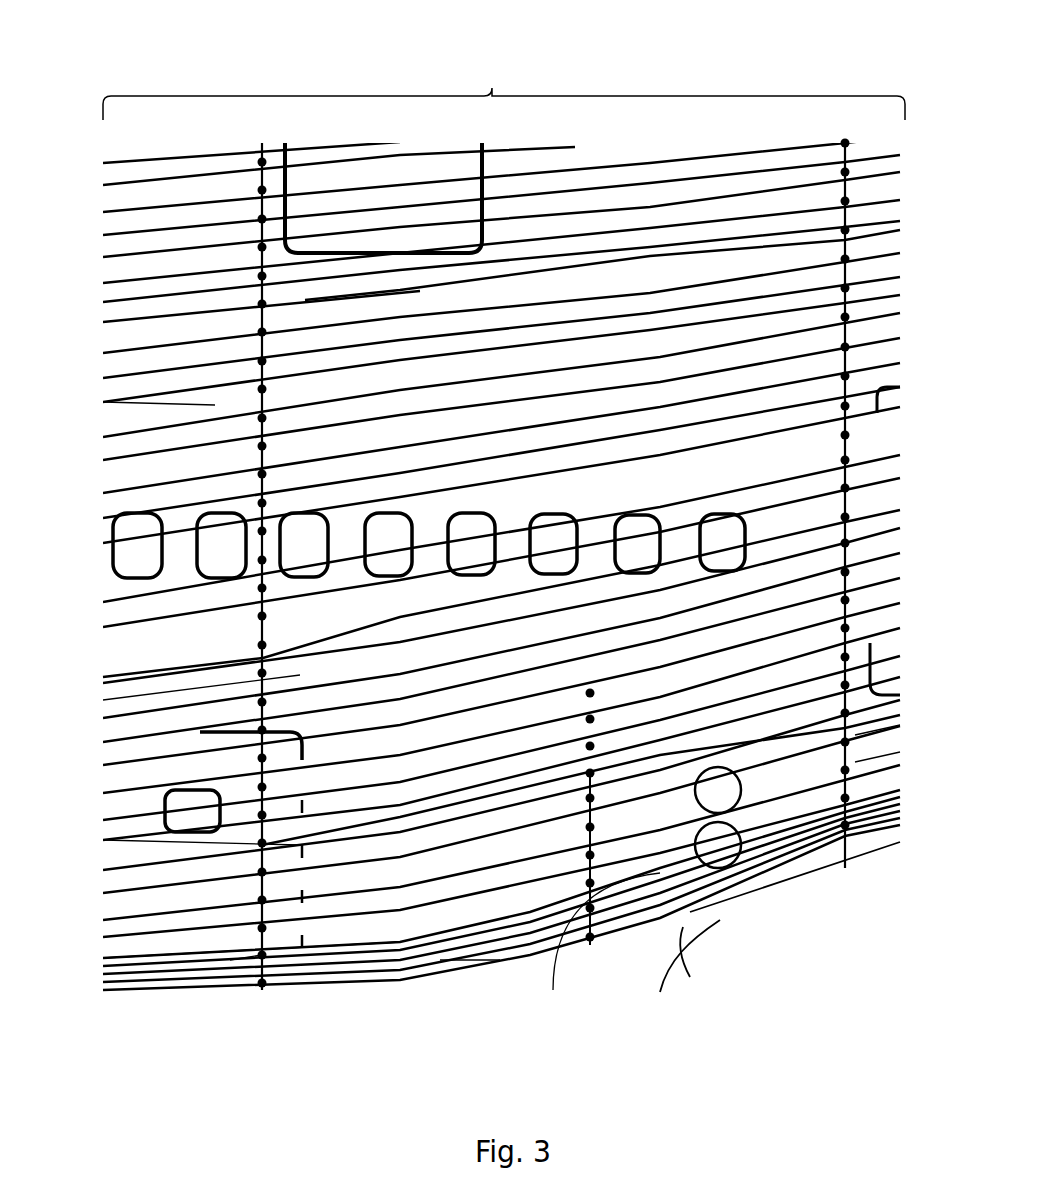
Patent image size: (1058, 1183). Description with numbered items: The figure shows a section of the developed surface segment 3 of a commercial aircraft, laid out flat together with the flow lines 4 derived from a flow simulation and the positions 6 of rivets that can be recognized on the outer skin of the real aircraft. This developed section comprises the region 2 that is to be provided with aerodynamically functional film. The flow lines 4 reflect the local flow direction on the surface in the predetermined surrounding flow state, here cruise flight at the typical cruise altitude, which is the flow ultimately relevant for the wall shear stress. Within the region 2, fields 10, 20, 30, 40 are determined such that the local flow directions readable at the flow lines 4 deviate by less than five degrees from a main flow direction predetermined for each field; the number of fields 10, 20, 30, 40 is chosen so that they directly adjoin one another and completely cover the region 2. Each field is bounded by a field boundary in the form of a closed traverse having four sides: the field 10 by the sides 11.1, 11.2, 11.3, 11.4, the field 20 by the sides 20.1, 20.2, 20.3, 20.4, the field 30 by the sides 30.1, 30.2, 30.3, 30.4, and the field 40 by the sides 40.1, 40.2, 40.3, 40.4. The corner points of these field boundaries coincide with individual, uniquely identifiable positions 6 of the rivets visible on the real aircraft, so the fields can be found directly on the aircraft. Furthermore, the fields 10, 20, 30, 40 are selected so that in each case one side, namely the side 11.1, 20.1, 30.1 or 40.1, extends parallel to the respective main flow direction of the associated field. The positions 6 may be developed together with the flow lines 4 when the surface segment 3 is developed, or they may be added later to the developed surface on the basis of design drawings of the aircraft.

The surface segment 3 is at (492, 92).
The flow lines 4 is at (150, 262).
The positions of rivets 6 is at (258, 190).
The field 10 is at (603, 505).
The side of field boundary 11.1 is at (625, 262).
The side of field boundary 11.2 is at (852, 335).
The side of field boundary 11.3 is at (306, 647).
The side of field boundary 11.4 is at (215, 405).
The region 2 is at (235, 644).
The field 20 is at (470, 740).
The side of field boundary 20.1 is at (350, 640).
The side of field boundary 20.2 is at (852, 625).
The side of field boundary 20.3 is at (300, 795).
The side of field boundary 20.4 is at (300, 760).
The field 30 is at (399, 933).
The side of field boundary 30.1 is at (300, 845).
The side of field boundary 30.2 is at (580, 950).
The side of field boundary 30.3 is at (455, 960).
The side of field boundary 30.4 is at (257, 937).
The field 40 is at (664, 818).
The side of field boundary 40.1 is at (852, 735).
The side of field boundary 40.2 is at (852, 762).
The side of field boundary 40.3 is at (755, 905).
The side of field boundary 40.4 is at (700, 935).